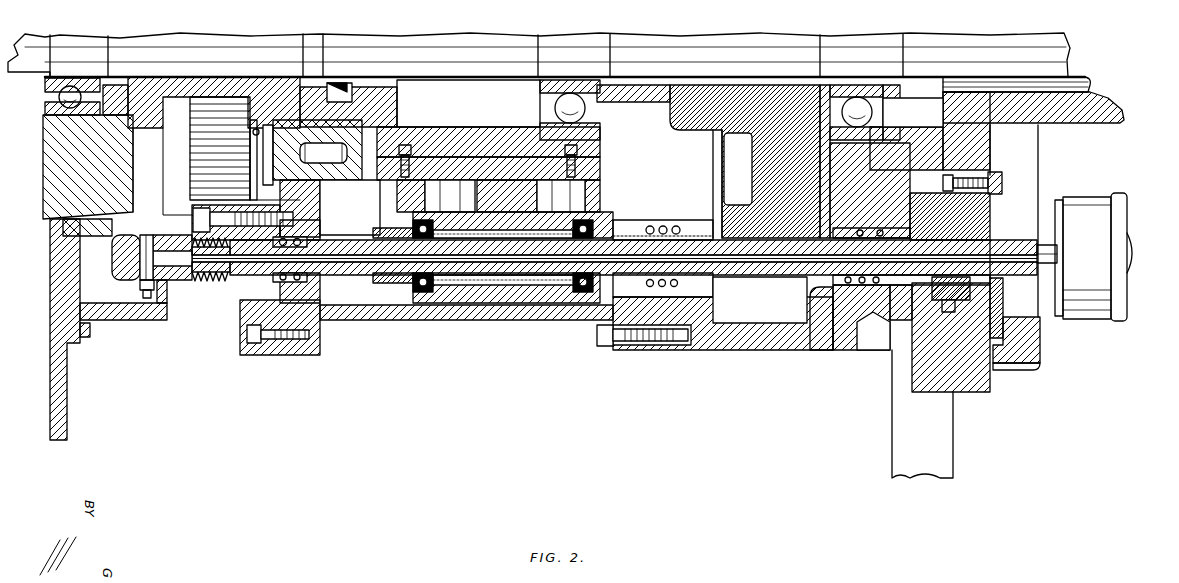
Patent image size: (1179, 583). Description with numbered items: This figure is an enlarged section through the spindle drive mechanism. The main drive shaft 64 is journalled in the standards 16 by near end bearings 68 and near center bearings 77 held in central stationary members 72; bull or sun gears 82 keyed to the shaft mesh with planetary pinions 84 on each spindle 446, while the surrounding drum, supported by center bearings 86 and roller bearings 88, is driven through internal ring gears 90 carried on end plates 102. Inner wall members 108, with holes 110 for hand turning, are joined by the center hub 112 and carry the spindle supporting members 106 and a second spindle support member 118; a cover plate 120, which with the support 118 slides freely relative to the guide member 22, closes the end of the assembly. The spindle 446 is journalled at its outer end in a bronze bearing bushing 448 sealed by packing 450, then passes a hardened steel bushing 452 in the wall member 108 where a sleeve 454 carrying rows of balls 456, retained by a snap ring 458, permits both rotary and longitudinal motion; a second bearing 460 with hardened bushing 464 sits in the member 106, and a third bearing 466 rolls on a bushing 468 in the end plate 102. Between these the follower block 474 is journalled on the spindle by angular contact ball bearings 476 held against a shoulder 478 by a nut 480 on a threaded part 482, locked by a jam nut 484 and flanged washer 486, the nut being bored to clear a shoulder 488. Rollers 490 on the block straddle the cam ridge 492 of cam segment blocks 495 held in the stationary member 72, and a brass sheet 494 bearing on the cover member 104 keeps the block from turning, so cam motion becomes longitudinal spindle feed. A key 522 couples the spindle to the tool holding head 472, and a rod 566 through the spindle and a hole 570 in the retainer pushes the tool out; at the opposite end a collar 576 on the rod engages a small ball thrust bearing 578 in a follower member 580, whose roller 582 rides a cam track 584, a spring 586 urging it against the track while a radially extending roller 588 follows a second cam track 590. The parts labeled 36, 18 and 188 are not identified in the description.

The main drive shaft 64 is at (175, 50).
The near end bearings 68 is at (50, 88).
The internal ring gears 90 is at (205, 155).
The cam segment blocks 495 is at (402, 140).
The roller bearings 88 is at (352, 125).
The central stationary members 72 is at (420, 135).
The rollers 490 is at (438, 190).
The cam ridge 492 is at (492, 185).
The near center bearings 77 is at (556, 95).
The support block 36 is at (717, 145).
The bull or sun gears 82 is at (752, 150).
The center bearings 86 is at (868, 105).
The inner wall members 108 is at (903, 175).
The center hub 112 is at (1050, 125).
The second spindle support member 118 is at (1006, 206).
The small ball thrust bearing 578 is at (148, 245).
The follower member 580 is at (122, 243).
The cam track 584 is at (125, 272).
The roller 582 is at (132, 280).
The spring 586 is at (202, 282).
The radially extending roller 588 is at (145, 316).
The second cam track 590 is at (160, 320).
The collar 576 is at (170, 292).
The standards 16 is at (68, 408).
The end plates 102 is at (353, 195).
The third bearing 466 is at (345, 236).
The threaded part 482 is at (366, 235).
The shoulder 488 is at (410, 240).
The bushing 468 is at (320, 286).
The jam nut 484 is at (382, 284).
The cover member 104 is at (348, 312).
The flanged washer 486 is at (388, 290).
The nut 480 is at (412, 292).
The hole 570 is at (472, 262).
The follower block 474 is at (503, 292).
The brass sheet 494 is at (528, 300).
The angular contact ball bearings 476 is at (580, 292).
The rod 566 is at (555, 265).
The hardened bushing 464 is at (612, 350).
The second bearing 460 is at (643, 346).
The spindle supporting members 106 is at (697, 348).
The spindle 446 is at (746, 285).
The hardened steel bushing 452 is at (830, 292).
The balls 456 is at (838, 288).
The holes 110 is at (882, 336).
The sleeve 454 is at (868, 288).
The planetary pinions 84 is at (787, 282).
The shoulder 478 is at (617, 222).
The key 522 is at (676, 222).
The snap ring 458 is at (900, 288).
The guide member 22 is at (968, 372).
The cover plate 120 is at (994, 348).
The lip 188 is at (1024, 370).
The bronze bearing bushing 448 is at (1003, 288).
The packing 450 is at (1001, 303).
The tool holding head 472 is at (1075, 275).
The column 18 is at (925, 438).